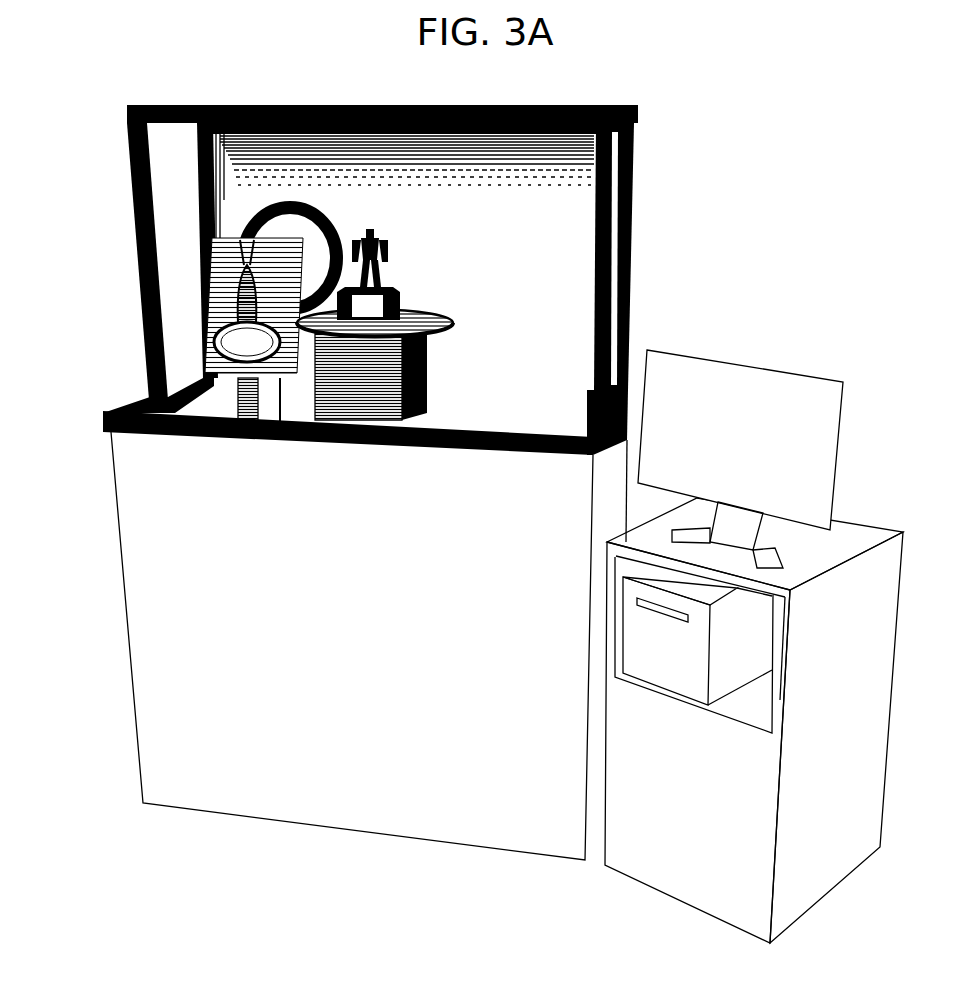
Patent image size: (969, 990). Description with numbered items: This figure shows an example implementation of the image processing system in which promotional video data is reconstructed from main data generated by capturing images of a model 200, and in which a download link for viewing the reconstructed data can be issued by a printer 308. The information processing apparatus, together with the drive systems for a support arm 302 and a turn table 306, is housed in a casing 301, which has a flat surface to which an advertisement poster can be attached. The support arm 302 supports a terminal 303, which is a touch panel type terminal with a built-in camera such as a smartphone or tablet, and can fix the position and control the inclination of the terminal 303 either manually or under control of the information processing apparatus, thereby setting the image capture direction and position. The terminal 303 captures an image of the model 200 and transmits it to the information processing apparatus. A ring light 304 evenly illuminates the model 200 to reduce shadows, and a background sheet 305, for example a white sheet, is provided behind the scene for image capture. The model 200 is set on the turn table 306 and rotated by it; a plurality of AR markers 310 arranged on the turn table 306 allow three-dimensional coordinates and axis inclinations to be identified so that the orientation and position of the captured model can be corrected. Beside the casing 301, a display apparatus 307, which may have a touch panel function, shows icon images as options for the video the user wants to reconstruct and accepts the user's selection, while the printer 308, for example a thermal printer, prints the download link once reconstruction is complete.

The model 200 is at (365, 237).
The casing 301 is at (145, 565).
The support arm 302 is at (240, 393).
The terminal 303 is at (223, 313).
The ring light 304 is at (263, 208).
The background sheet 305 is at (367, 162).
The turn table 306 is at (413, 315).
The display apparatus 307 is at (782, 392).
The printer 308 is at (732, 660).
The AR markers 310 is at (400, 333).